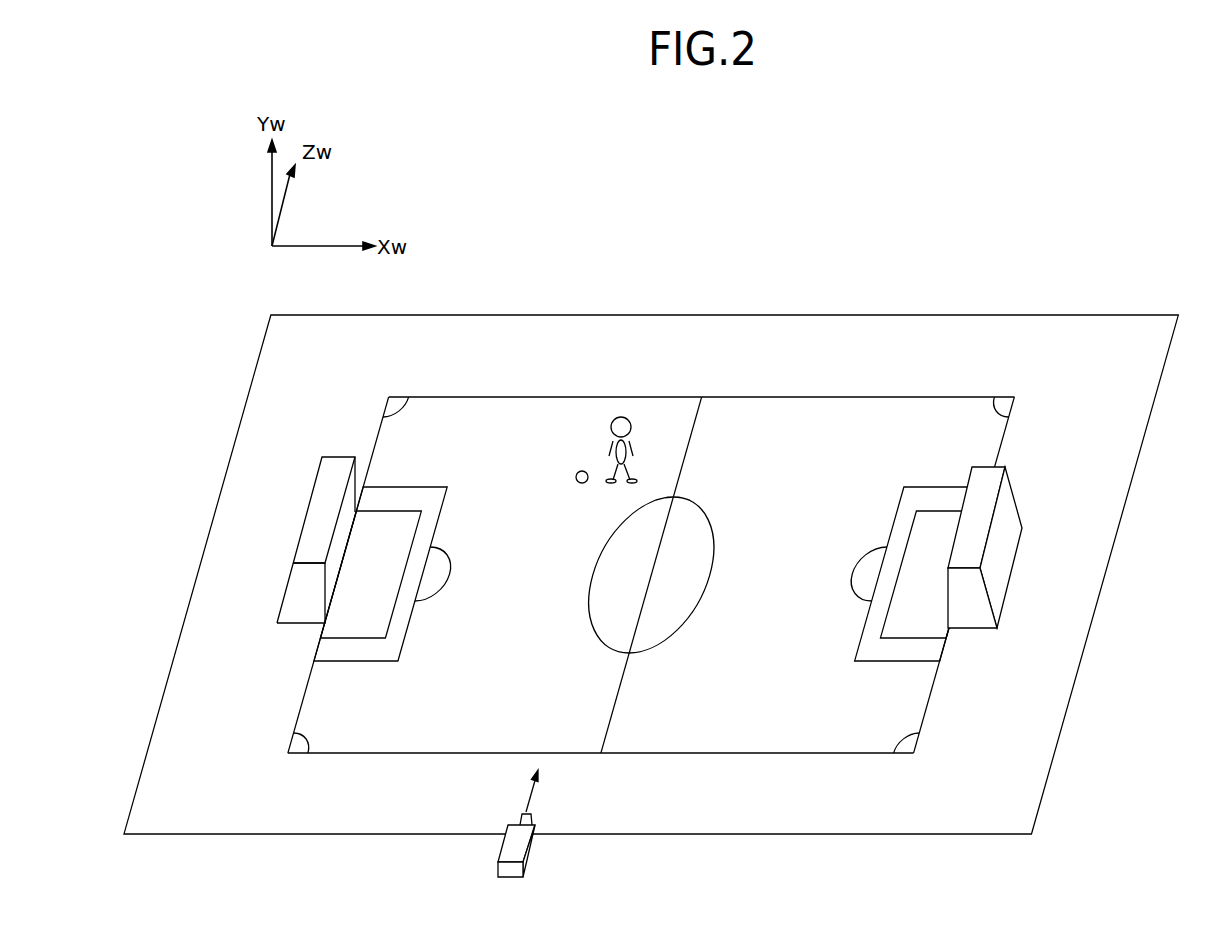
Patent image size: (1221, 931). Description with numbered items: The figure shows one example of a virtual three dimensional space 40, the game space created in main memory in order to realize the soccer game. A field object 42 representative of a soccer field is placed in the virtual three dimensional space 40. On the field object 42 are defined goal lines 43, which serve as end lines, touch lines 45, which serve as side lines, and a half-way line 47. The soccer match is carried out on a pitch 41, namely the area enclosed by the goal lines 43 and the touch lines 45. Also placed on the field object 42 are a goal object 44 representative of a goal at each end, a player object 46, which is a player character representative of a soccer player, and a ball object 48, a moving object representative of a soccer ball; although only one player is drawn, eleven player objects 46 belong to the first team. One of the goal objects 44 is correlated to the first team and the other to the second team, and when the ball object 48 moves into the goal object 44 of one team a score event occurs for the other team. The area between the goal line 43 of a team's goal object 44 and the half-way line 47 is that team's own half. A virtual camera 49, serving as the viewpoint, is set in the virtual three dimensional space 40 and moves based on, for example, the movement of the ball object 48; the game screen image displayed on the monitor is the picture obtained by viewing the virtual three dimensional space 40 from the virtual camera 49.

The virtual three dimensional space 40 is at (613, 199).
The pitch 41 is at (682, 753).
The field object 42 is at (872, 332).
The goal line 43 is at (305, 693).
The goal object 44 is at (285, 594).
The touch line 45 is at (960, 397).
The player object 46 is at (619, 417).
The half-way line 47 is at (688, 445).
The ball object 48 is at (576, 476).
The virtual camera 49 is at (537, 848).